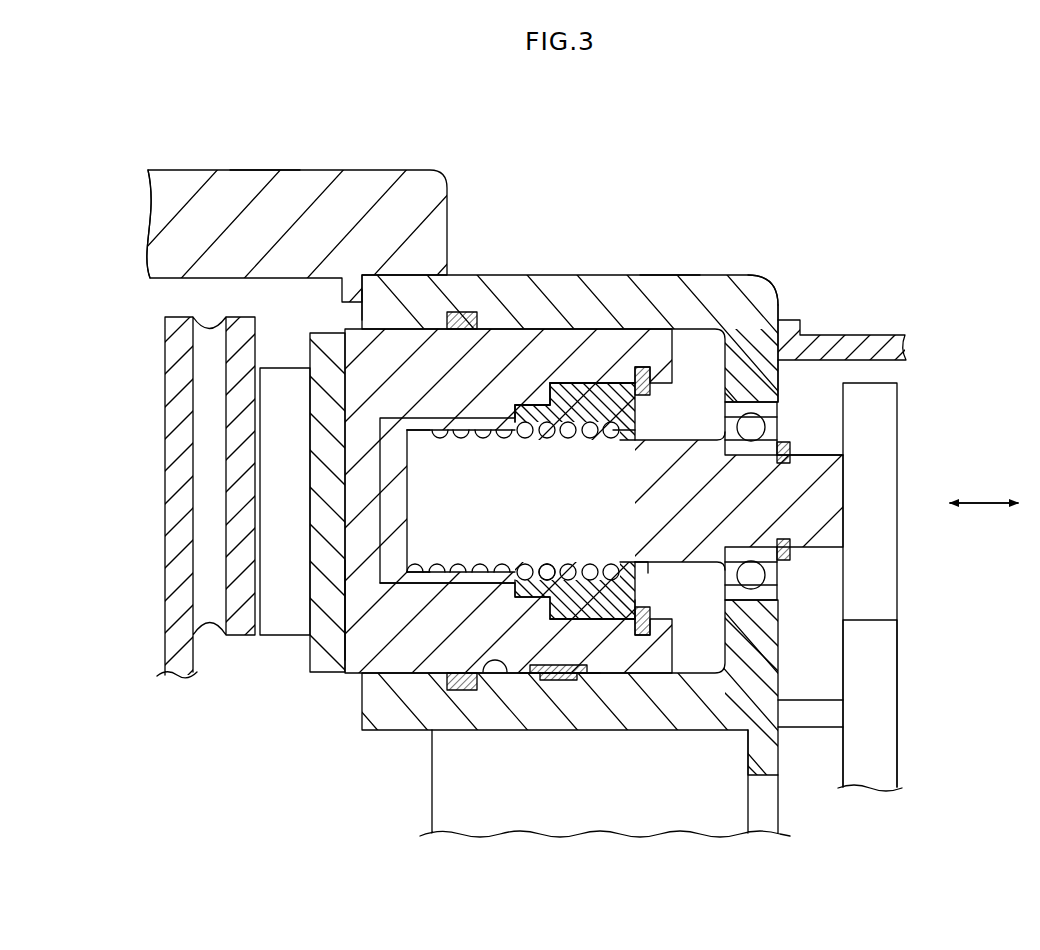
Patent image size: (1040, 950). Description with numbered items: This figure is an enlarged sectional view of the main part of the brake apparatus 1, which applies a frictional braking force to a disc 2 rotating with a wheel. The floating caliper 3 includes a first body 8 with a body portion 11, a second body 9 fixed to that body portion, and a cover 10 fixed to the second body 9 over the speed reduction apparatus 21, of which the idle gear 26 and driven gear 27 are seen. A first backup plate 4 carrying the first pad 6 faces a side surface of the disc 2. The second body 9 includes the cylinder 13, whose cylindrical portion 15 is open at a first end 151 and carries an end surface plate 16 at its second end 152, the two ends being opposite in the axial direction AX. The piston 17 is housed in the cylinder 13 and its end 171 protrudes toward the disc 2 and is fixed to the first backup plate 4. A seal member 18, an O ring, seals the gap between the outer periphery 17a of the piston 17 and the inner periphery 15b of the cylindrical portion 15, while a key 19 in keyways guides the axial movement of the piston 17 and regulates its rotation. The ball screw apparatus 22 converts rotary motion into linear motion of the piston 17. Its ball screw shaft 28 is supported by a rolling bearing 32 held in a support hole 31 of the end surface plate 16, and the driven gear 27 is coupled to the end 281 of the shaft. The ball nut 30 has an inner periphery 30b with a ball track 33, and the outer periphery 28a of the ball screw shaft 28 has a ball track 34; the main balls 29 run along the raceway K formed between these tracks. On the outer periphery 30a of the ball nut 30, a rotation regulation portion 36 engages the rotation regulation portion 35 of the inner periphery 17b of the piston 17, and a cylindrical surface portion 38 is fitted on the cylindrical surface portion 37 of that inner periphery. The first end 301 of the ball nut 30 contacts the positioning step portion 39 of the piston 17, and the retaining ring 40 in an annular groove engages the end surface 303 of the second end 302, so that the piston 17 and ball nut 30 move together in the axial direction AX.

The brake apparatus 1 is at (845, 278).
The disc 2 is at (213, 332).
The floating caliper 3 is at (364, 165).
The first backup plate 4 is at (326, 338).
The first pad 6 is at (287, 372).
The first body 8 is at (253, 168).
The second body 9 is at (537, 257).
The cover 10 is at (872, 337).
The body portion 11 is at (192, 172).
The cylinder 13 is at (665, 272).
The cylindrical portion 15 is at (589, 475).
The inner periphery 15b is at (497, 700).
The end surface plate 16 is at (762, 392).
The piston 17 is at (520, 475).
The outer periphery 17a is at (545, 668).
The inner periphery 17b is at (433, 578).
The seal member 18 is at (475, 690).
The key 19 is at (568, 681).
The speed reduction apparatus 21 is at (915, 646).
The ball screw apparatus 22 is at (620, 622).
The idle gear 26 is at (888, 686).
The driven gear 27 is at (888, 600).
The ball screw shaft 28 is at (587, 475).
The outer periphery 28a is at (407, 576).
The main balls 29 is at (636, 428).
The ball nut 30 is at (560, 475).
The outer periphery 30a is at (589, 384).
The inner periphery 30b is at (509, 475).
The support hole 31 is at (798, 504).
The rolling bearing 32 is at (766, 427).
The ball track 33 is at (513, 501).
The ball track 34 is at (474, 584).
The rotation regulation portion 35 is at (560, 571).
The rotation regulation portion 36 is at (493, 674).
The cylindrical surface portion 37 is at (606, 626).
The cylindrical surface portion 38 is at (644, 637).
The positioning step portion 39 is at (522, 408).
The retaining ring 40 is at (652, 615).
The first end 151 is at (378, 283).
The second end 152 is at (740, 284).
The end 171 is at (350, 615).
The end 281 is at (820, 460).
The first end 301 is at (527, 398).
The second end 302 is at (641, 407).
The end surface 303 is at (640, 593).
The raceway K is at (645, 576).
The axial direction AX is at (998, 498).